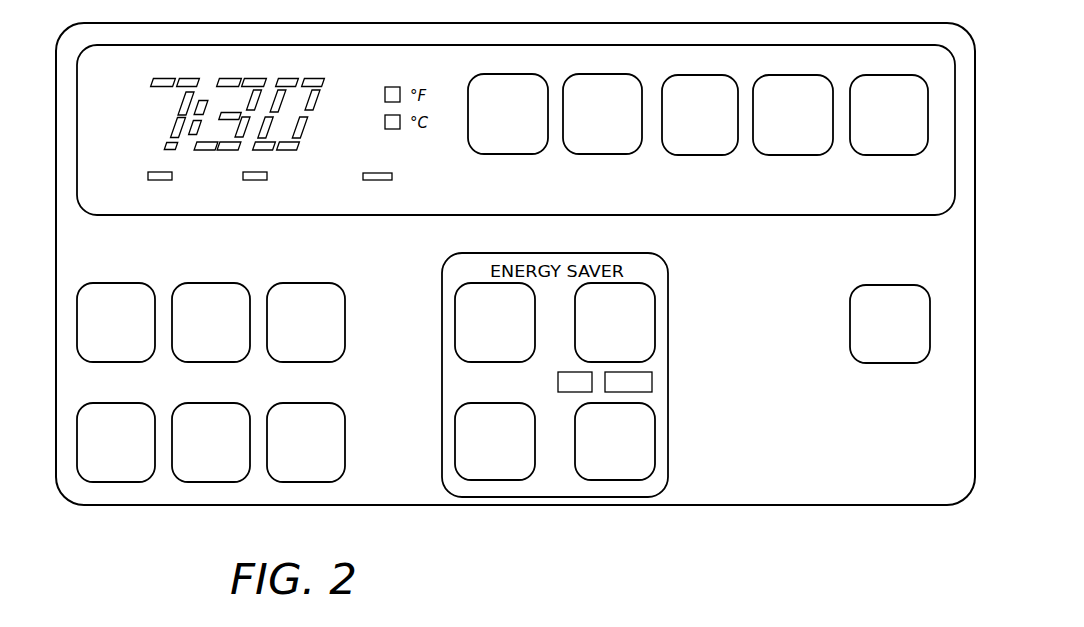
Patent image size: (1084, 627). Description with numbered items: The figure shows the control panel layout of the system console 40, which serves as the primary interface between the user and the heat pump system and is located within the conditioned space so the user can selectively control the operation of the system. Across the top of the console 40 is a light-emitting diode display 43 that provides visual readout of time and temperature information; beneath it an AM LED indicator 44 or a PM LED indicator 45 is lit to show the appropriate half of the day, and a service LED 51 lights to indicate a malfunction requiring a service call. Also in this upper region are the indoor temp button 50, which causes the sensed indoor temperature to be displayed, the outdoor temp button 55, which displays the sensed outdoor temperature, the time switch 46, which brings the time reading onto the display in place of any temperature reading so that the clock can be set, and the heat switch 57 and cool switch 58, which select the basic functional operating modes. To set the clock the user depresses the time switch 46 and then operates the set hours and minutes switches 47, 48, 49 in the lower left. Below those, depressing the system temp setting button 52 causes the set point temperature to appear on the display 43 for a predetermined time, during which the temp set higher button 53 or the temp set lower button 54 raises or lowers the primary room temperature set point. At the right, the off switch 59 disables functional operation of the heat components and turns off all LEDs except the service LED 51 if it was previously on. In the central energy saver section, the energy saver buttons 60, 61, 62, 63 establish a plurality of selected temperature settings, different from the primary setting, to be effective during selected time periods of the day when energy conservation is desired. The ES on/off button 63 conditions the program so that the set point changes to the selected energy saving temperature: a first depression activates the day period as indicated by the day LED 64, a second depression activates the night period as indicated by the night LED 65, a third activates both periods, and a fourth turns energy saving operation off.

The system console 40 is at (760, 510).
The light-emitting diode display 43 is at (337, 91).
The AM LED indicator 44 is at (148, 172).
The PM LED indicator 45 is at (243, 176).
The time switch 46 is at (701, 156).
The set hours switch 47 is at (120, 283).
The set tens of minutes switch 48 is at (205, 283).
The set minutes switch 49 is at (310, 283).
The indoor temp button 50 is at (505, 155).
The service LED 51 is at (396, 176).
The system temp setting button 52 is at (117, 403).
The temp set higher button 53 is at (205, 403).
The temp set lower button 54 is at (306, 403).
The outdoor temp button 55 is at (605, 155).
The heat switch 57 is at (794, 156).
The cool switch 58 is at (890, 156).
The off switch 59 is at (900, 285).
The energy saver start time button 60 is at (455, 318).
The energy saver stop time button 61 is at (655, 306).
The energy saver temp setting button 62 is at (455, 430).
The ES on/off button 63 is at (655, 423).
The day LED 64 is at (558, 382).
The night LED 65 is at (652, 377).